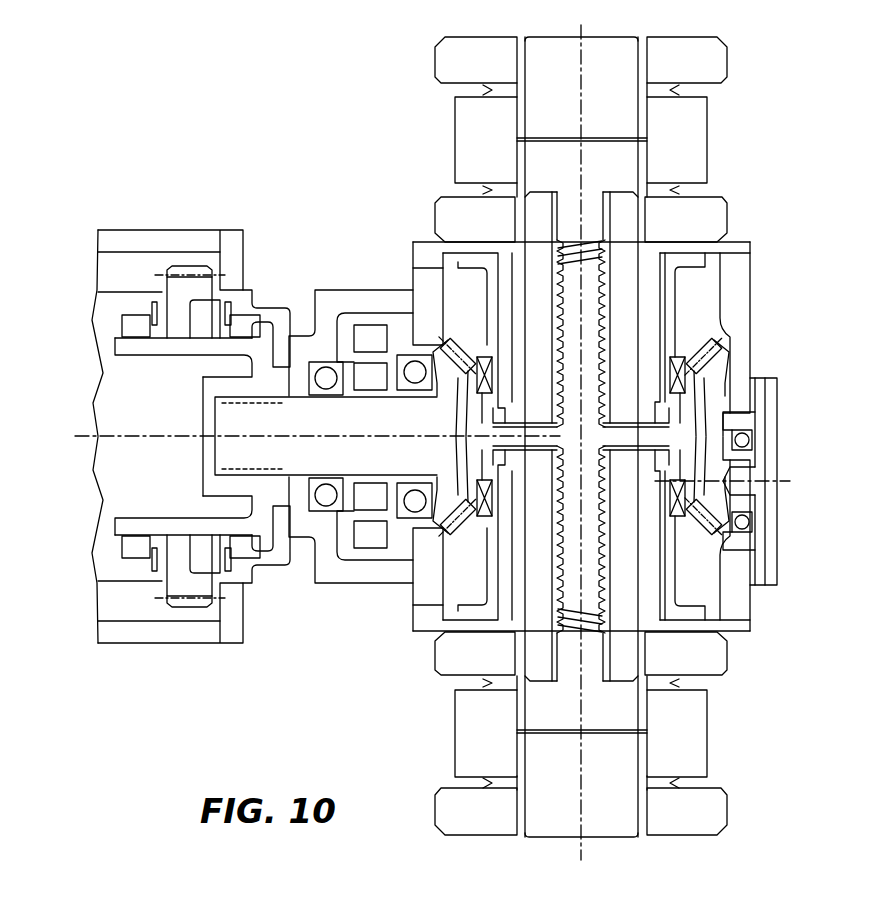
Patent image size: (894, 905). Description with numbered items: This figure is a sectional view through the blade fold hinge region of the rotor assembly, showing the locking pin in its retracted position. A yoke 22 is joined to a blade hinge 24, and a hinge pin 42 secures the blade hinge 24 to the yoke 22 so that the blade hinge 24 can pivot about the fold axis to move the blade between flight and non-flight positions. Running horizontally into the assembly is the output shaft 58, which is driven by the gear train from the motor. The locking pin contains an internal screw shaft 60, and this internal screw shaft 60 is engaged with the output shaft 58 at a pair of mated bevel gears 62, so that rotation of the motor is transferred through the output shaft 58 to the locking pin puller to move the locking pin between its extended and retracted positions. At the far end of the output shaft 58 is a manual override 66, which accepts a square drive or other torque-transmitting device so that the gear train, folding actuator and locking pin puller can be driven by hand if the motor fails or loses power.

The yoke 22 is at (715, 55).
The blade hinge 24 is at (690, 138).
The hinge pin 42 is at (625, 222).
The output shaft 58 is at (243, 450).
The internal screw shaft 60 is at (588, 335).
The mated bevel gears 62 is at (466, 370).
The manual override 66 is at (760, 472).